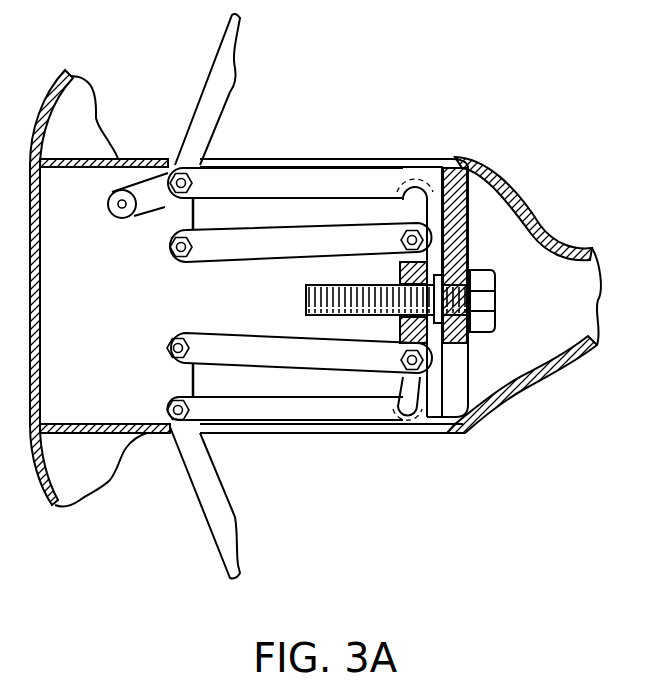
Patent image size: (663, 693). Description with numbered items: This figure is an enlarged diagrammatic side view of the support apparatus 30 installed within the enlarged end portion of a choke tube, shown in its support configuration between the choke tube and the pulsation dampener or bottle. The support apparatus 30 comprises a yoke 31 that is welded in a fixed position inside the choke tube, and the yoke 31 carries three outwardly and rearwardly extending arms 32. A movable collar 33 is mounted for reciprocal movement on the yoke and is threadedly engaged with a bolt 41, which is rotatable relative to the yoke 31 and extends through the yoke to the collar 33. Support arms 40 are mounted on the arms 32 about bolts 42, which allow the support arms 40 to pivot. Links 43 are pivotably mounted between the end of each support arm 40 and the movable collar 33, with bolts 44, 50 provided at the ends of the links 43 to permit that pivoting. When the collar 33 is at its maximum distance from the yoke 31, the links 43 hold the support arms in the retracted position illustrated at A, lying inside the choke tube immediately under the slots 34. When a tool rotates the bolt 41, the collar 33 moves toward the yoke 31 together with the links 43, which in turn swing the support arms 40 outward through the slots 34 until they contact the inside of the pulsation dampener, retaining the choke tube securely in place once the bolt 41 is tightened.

The support apparatus 30 is at (113, 368).
The yoke 31 is at (430, 378).
The arm 32 is at (243, 185).
The movable collar 33 is at (427, 357).
The slot 34 is at (347, 160).
The support arm 40 is at (233, 70).
The bolt 41 is at (497, 298).
The bolt 42 is at (193, 181).
The link 43 is at (293, 245).
The bolt 44 is at (166, 348).
The bolt 50 is at (427, 418).
The retracted position A is at (117, 195).